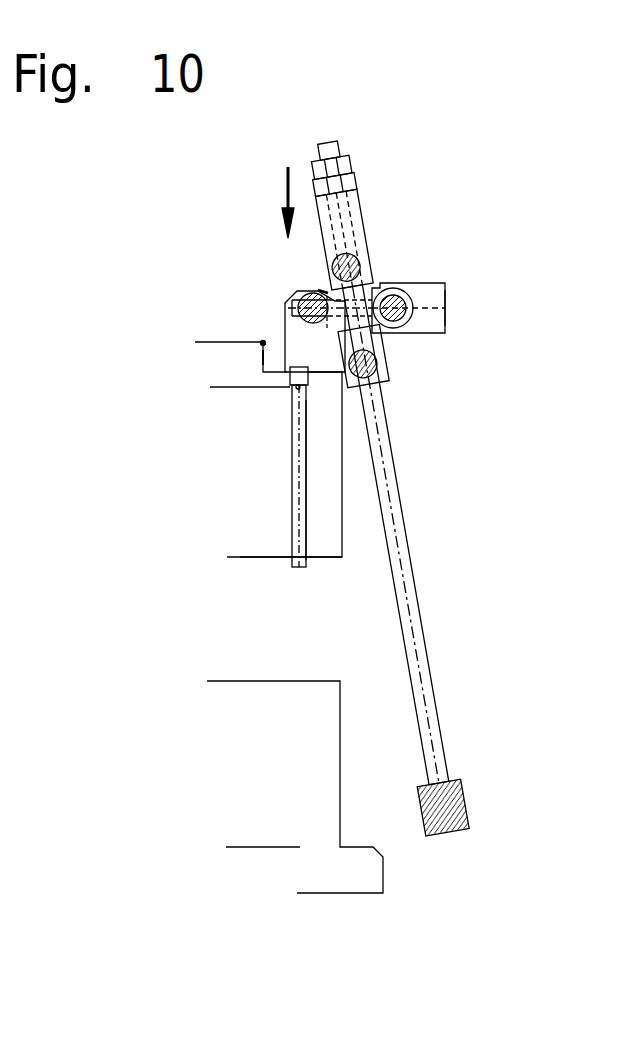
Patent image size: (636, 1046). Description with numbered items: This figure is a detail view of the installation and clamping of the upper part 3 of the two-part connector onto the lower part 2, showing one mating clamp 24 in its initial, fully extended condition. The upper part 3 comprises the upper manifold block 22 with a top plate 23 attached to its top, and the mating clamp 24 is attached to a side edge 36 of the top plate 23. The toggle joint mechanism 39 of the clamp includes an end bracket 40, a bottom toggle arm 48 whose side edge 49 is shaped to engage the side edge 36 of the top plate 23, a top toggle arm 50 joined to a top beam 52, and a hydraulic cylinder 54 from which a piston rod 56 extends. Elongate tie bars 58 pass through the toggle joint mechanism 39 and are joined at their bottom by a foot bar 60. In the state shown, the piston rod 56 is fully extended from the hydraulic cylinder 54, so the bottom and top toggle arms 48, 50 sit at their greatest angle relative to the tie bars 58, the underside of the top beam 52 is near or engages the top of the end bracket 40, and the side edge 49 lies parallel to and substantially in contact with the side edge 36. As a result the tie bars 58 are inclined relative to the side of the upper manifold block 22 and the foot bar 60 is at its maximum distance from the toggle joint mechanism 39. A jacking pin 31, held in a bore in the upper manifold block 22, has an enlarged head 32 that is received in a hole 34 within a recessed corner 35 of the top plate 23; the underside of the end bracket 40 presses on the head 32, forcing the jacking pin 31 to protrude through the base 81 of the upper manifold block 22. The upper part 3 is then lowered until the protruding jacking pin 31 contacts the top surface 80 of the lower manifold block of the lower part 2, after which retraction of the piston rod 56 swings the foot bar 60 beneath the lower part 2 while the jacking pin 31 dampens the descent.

The lower part 2 is at (193, 775).
The upper part 3 is at (130, 493).
The upper manifold block 22 is at (210, 524).
The top plate 23 is at (229, 372).
The mating clamp 24 is at (622, 85).
The jacking pin 31 is at (315, 475).
The head 32 is at (258, 357).
The hole 34 is at (287, 390).
The recessed corner 35 is at (263, 343).
The side edge 36 is at (283, 298).
The toggle joint mechanism 39 is at (528, 198).
The end bracket 40 is at (278, 325).
The bottom toggle arm 48 is at (404, 364).
The side edge 49 is at (334, 388).
The top toggle arm 50 is at (385, 285).
The top beam 52 is at (365, 192).
The hydraulic cylinder 54 is at (453, 323).
The piston rod 56 is at (325, 290).
The tie bar 58 is at (420, 592).
The foot bar 60 is at (464, 837).
The top surface 80 is at (241, 670).
The base 81 is at (265, 560).